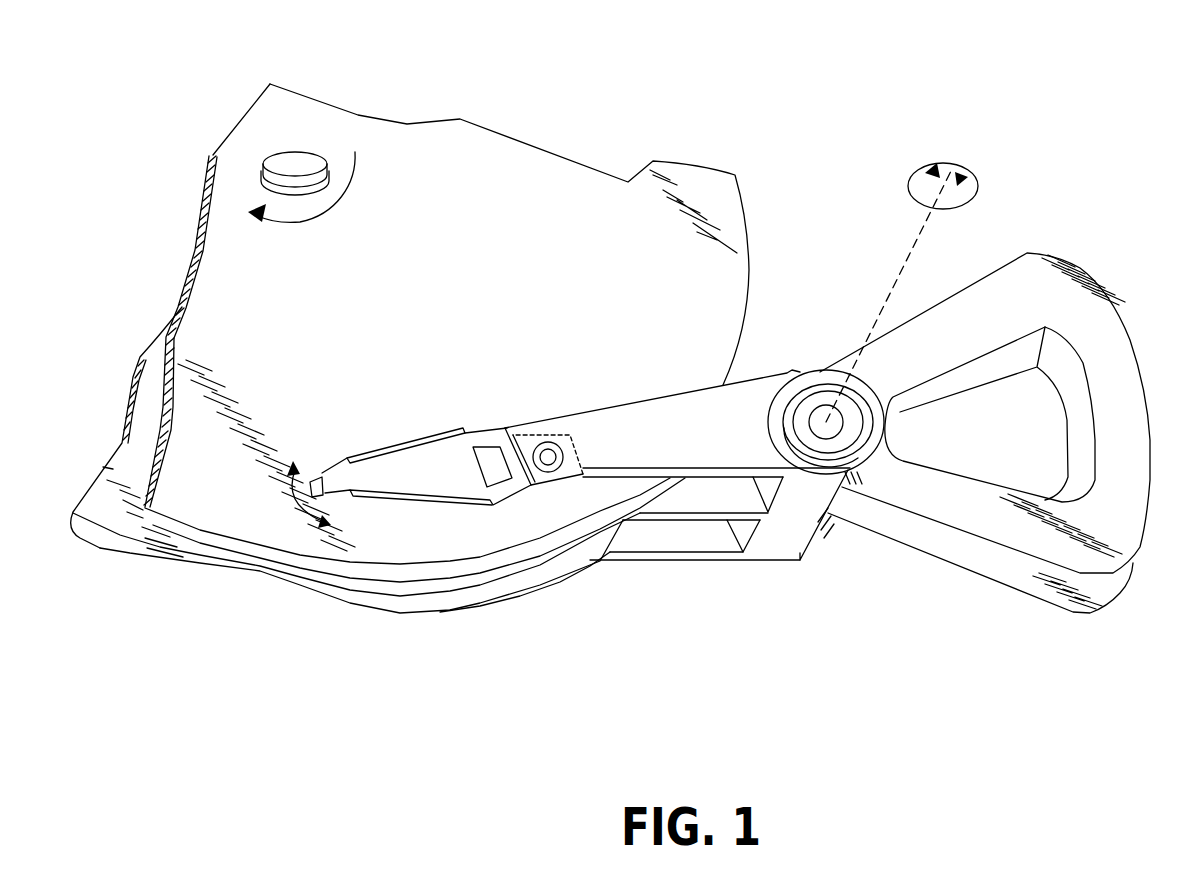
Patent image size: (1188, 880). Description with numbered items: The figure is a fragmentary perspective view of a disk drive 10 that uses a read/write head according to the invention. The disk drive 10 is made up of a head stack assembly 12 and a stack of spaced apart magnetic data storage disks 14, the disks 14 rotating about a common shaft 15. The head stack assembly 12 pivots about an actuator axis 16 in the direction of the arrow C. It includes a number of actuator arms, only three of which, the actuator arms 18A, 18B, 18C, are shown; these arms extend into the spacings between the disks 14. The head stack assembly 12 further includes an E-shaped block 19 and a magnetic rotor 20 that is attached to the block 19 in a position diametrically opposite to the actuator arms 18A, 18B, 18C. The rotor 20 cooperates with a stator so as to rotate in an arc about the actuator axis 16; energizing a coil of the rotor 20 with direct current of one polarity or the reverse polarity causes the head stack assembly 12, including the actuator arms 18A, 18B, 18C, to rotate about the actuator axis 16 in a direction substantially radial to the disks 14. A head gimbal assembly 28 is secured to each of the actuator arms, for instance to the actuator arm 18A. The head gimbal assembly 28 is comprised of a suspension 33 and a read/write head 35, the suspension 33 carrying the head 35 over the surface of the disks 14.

The disk drive 10 is at (592, 46).
The head stack assembly 12 is at (796, 606).
The magnetic data storage disks 14 is at (459, 223).
The common shaft 15 is at (278, 162).
The actuator axis 16 is at (917, 237).
The actuator arm 18A is at (692, 391).
The actuator arm 18B is at (675, 513).
The actuator arm 18C is at (718, 560).
The E-shaped block 19 is at (800, 545).
The magnetic rotor 20 is at (970, 560).
The head gimbal assembly 28 is at (414, 418).
The suspension 33 is at (448, 487).
The read/write head 35 is at (312, 484).